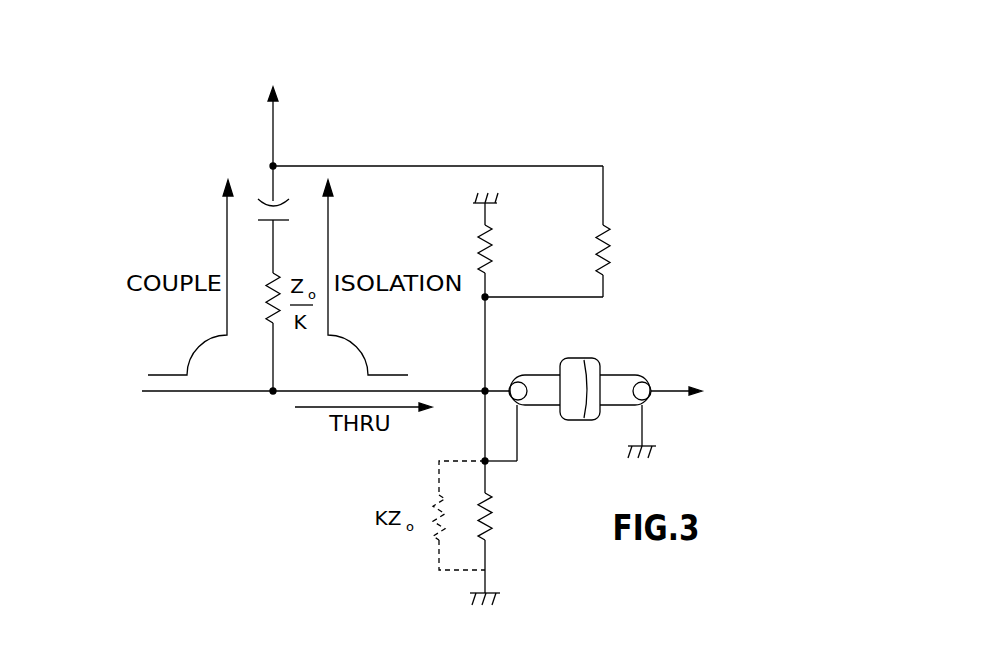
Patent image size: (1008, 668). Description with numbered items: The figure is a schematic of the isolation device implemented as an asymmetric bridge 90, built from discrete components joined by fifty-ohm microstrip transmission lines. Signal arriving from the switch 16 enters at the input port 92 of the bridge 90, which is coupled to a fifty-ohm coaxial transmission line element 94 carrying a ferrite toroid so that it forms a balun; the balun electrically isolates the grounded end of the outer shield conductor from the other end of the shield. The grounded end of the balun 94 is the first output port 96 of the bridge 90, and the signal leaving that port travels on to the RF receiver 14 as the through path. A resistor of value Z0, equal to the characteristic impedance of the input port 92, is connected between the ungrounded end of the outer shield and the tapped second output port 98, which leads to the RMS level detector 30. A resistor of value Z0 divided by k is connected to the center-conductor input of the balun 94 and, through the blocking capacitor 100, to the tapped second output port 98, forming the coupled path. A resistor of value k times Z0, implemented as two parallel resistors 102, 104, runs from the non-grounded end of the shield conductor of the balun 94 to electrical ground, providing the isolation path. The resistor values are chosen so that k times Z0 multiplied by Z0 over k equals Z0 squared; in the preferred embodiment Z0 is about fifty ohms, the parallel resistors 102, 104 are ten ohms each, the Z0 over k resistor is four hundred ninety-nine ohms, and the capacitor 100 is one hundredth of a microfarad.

The asymmetric bridge 90 is at (570, 101).
The RMS level detector 30 is at (273, 58).
The tapped second output port 98 is at (275, 118).
The blocking capacitor 100 is at (256, 213).
The switch 16 is at (88, 392).
The input port 92 is at (175, 393).
The resistor 104 is at (492, 240).
The resistor 102 is at (495, 508).
The coaxial transmission line element 94 is at (617, 372).
The first output port 96 is at (668, 387).
The RF receiver 14 is at (772, 390).